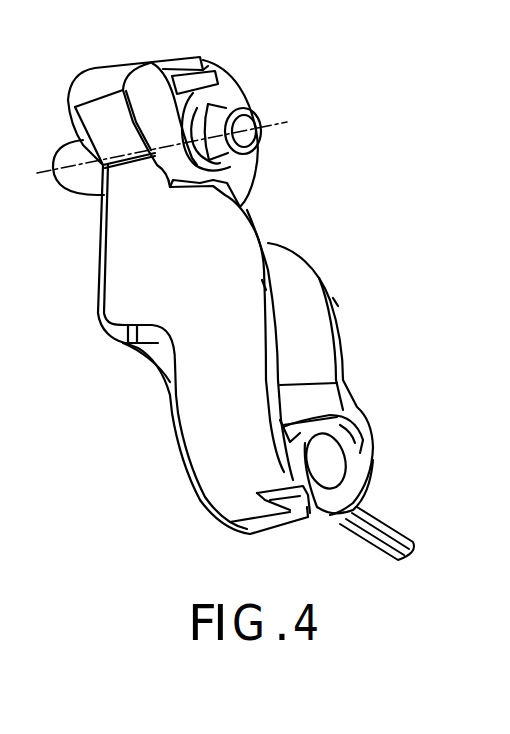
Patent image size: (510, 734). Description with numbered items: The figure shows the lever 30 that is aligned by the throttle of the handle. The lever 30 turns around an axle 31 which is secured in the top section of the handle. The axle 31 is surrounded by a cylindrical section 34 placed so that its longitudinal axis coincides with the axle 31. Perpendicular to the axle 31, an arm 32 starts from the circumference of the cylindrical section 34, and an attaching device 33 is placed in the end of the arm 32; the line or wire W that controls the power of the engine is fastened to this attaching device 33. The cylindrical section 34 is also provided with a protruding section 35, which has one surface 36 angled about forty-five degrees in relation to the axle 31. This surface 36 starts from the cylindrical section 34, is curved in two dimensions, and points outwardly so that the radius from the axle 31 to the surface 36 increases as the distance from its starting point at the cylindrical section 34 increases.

The lever 30 is at (302, 249).
The axle 31 is at (243, 120).
The arm 32 is at (140, 285).
The attaching device 33 is at (330, 462).
The cylindrical section 34 is at (213, 75).
The protruding section 35 is at (96, 73).
The surface 36 is at (143, 93).
The line or wire W is at (360, 540).